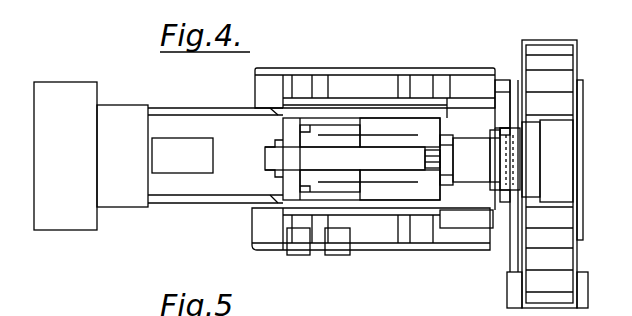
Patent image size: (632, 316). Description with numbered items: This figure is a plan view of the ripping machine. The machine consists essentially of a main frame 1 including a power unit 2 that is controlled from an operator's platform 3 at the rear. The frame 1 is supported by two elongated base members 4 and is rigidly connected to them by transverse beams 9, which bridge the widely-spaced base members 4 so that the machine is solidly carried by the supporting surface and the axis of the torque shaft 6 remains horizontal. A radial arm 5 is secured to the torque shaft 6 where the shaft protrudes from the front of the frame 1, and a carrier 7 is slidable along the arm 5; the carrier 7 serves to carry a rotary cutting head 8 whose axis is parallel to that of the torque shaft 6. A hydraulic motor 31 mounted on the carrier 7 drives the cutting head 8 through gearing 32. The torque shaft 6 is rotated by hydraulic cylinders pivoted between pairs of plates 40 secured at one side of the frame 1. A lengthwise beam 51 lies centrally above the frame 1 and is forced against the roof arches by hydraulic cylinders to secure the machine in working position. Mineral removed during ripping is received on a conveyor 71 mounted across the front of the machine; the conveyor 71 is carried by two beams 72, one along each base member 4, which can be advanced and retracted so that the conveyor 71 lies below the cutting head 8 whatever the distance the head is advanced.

The main frame 1 is at (361, 159).
The power unit 2 is at (182, 155).
The operator's platform 3 is at (91, 156).
The base member 4 is at (258, 92).
The radial arm 5 is at (471, 160).
The torque shaft 6 is at (447, 146).
The carrier 7 is at (496, 131).
The rotary cutting head 8 is at (560, 170).
The transverse beam 9 is at (306, 84).
The hydraulic motor 31 is at (520, 140).
The gearing 32 is at (535, 182).
The plates 40 is at (342, 244).
The lengthwise beam 51 is at (272, 158).
The conveyor 71 is at (560, 82).
The beam 72 is at (505, 80).